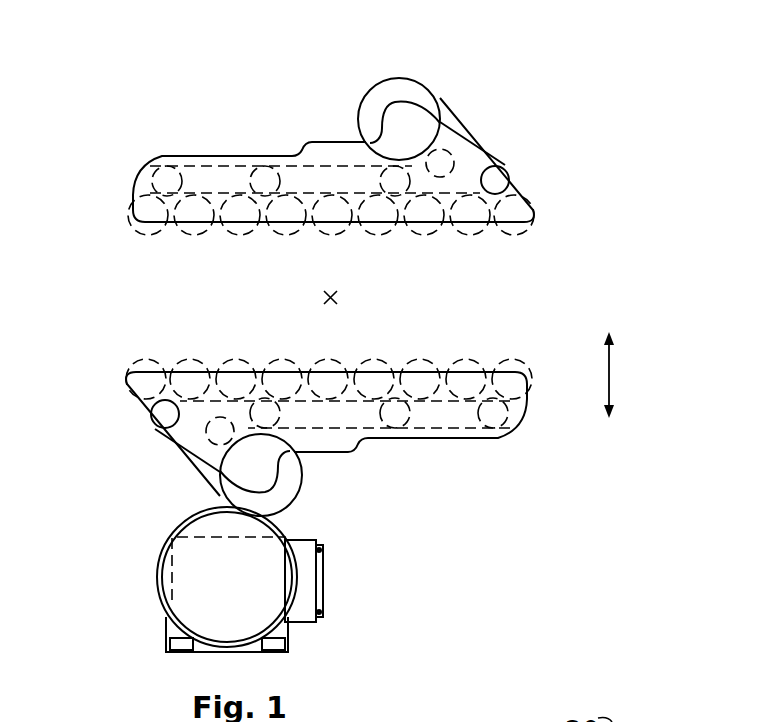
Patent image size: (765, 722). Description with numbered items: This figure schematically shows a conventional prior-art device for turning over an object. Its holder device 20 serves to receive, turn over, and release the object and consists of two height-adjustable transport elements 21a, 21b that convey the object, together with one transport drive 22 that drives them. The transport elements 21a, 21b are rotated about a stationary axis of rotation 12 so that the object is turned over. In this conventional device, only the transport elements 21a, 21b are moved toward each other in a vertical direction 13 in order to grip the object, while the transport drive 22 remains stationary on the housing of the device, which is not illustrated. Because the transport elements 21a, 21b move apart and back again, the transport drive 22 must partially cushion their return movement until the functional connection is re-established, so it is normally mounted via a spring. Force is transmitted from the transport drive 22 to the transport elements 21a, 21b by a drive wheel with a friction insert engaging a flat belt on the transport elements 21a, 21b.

The holder device 20 is at (556, 112).
The transport element 21a is at (120, 217).
The transport element 21b is at (120, 398).
The stationary axis of rotation 12 is at (334, 297).
The vertical direction 13 is at (626, 375).
The transport drive 22 is at (143, 572).